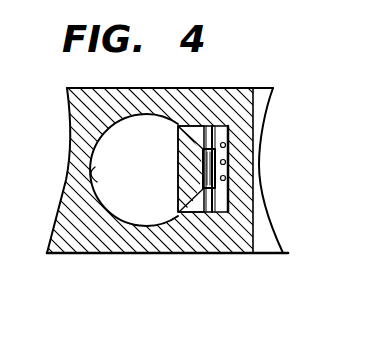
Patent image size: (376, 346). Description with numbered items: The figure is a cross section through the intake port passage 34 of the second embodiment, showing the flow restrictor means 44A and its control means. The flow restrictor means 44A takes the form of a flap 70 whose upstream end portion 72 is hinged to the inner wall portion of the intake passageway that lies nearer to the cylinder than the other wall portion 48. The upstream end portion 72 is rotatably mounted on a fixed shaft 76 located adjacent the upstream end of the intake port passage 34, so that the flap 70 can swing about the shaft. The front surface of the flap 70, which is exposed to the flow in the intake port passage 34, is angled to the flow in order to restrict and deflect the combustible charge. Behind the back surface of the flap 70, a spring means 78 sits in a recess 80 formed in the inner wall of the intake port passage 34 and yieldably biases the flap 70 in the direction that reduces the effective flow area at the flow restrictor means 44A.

The intake port passage 34 is at (137, 210).
The flow restrictor means 44A is at (178, 167).
The other wall portion 48 is at (92, 168).
The flap 70 is at (190, 206).
The upstream end portion 72 is at (256, 200).
The fixed shaft 76 is at (207, 138).
The spring means 78 is at (226, 178).
The recess 80 is at (226, 146).